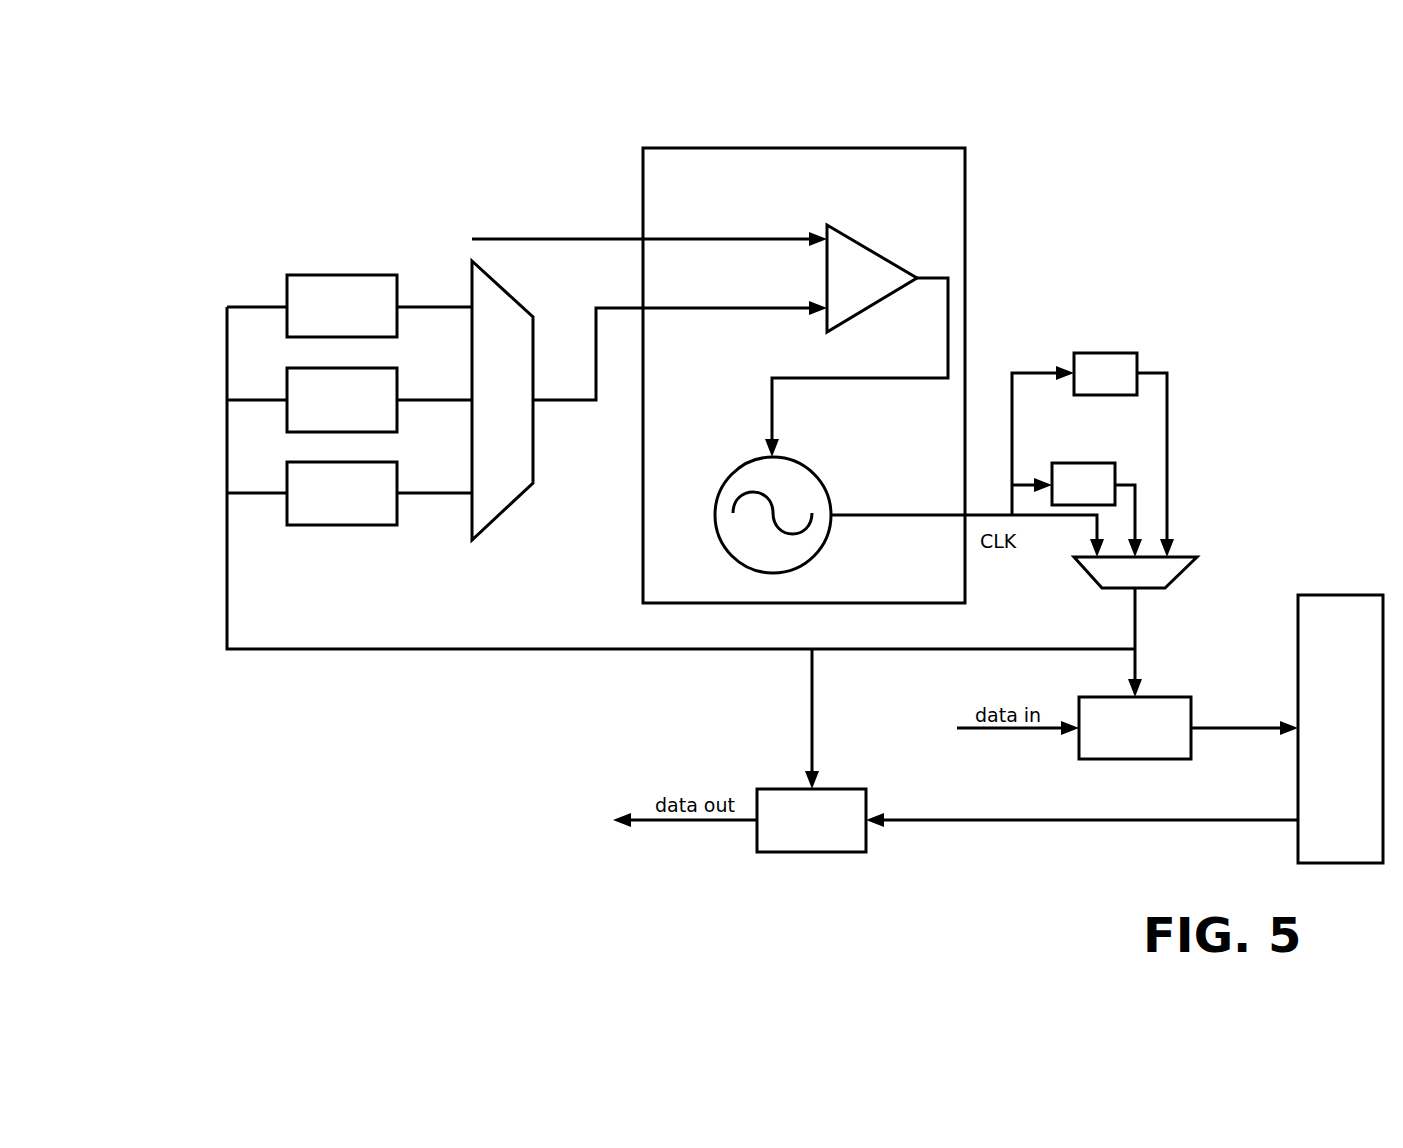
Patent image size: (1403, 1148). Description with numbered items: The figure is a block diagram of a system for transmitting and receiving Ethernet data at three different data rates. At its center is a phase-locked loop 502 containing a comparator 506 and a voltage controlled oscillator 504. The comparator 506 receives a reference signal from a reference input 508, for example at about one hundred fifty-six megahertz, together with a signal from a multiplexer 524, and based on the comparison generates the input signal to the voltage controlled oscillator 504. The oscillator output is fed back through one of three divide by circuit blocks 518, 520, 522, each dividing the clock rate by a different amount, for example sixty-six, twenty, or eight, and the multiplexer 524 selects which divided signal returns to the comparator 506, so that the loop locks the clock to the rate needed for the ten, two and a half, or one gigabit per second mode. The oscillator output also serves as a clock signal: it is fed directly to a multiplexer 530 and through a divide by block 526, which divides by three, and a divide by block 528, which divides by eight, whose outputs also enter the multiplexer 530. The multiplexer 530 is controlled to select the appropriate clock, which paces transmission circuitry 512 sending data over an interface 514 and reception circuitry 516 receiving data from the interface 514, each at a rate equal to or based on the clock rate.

The phase-locked loop 502 is at (745, 148).
The voltage controlled oscillator 504 is at (712, 513).
The comparator 506 is at (868, 250).
The reference input 508 is at (748, 240).
The transmission circuitry 512 is at (1165, 697).
The interface 514 is at (1345, 595).
The reception circuitry 516 is at (810, 852).
The divide by n1 block 518 is at (340, 275).
The divide by n2 block 520 is at (397, 385).
The divide by n3 block 522 is at (340, 525).
The multiplexer 524 is at (498, 512).
The divide by block 526 is at (1083, 463).
The divide by block 528 is at (1108, 353).
The multiplexer 530 is at (1180, 580).